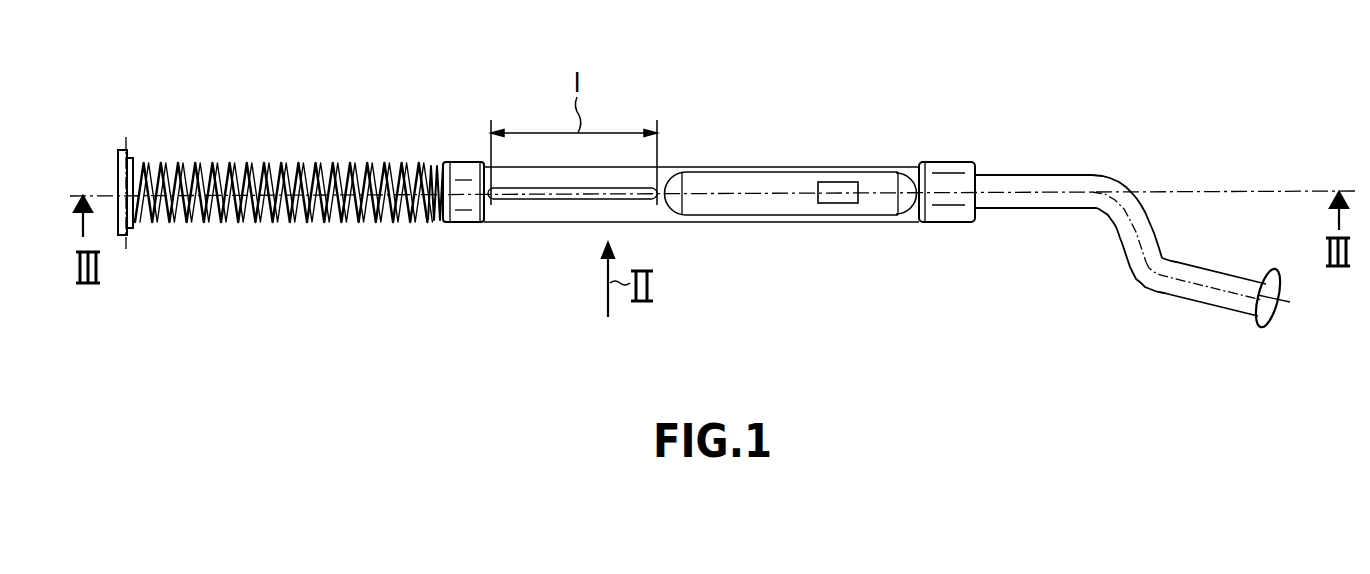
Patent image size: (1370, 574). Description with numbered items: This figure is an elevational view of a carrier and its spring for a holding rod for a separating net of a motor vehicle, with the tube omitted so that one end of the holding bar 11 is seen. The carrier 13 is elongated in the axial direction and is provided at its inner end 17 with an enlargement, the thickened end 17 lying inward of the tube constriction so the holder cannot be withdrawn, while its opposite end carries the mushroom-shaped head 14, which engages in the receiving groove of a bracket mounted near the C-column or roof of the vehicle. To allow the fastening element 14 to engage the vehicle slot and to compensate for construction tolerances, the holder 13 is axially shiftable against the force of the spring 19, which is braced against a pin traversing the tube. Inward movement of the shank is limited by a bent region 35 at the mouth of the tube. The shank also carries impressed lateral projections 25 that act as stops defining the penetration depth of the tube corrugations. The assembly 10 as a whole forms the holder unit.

The tool body 10 is at (897, 128).
The holding bar 11 is at (551, 244).
The carrier 13 is at (1089, 140).
The mushroom-shaped head 14 is at (1248, 332).
The inner thickened end 17 is at (463, 236).
The spring 19 is at (283, 224).
The lateral projections 25 is at (835, 170).
The bent region 35 is at (1141, 195).